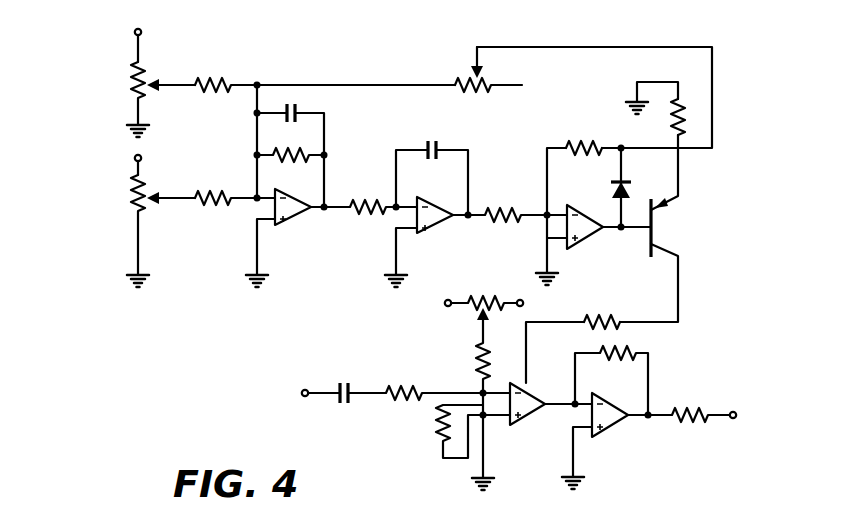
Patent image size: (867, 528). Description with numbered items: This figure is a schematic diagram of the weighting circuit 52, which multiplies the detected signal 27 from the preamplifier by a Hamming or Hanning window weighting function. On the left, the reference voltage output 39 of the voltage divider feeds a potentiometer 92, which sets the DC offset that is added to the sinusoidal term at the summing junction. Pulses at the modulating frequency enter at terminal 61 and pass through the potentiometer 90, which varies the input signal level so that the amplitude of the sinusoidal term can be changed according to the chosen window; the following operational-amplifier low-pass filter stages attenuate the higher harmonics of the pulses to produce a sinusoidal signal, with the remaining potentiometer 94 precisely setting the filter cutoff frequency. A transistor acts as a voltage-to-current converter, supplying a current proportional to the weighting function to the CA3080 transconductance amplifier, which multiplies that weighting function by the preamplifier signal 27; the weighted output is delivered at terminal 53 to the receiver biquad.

The weighting circuit 52 is at (78, 33).
The output of the voltage divider 39 is at (134, 33).
The potentiometer 92 is at (129, 82).
The pulse input terminal 61 is at (141, 156).
The potentiometer 90 is at (136, 209).
The potentiometer 94 is at (465, 94).
The detected signal 27 is at (308, 388).
The output terminal to receiver biquad 53 is at (733, 411).